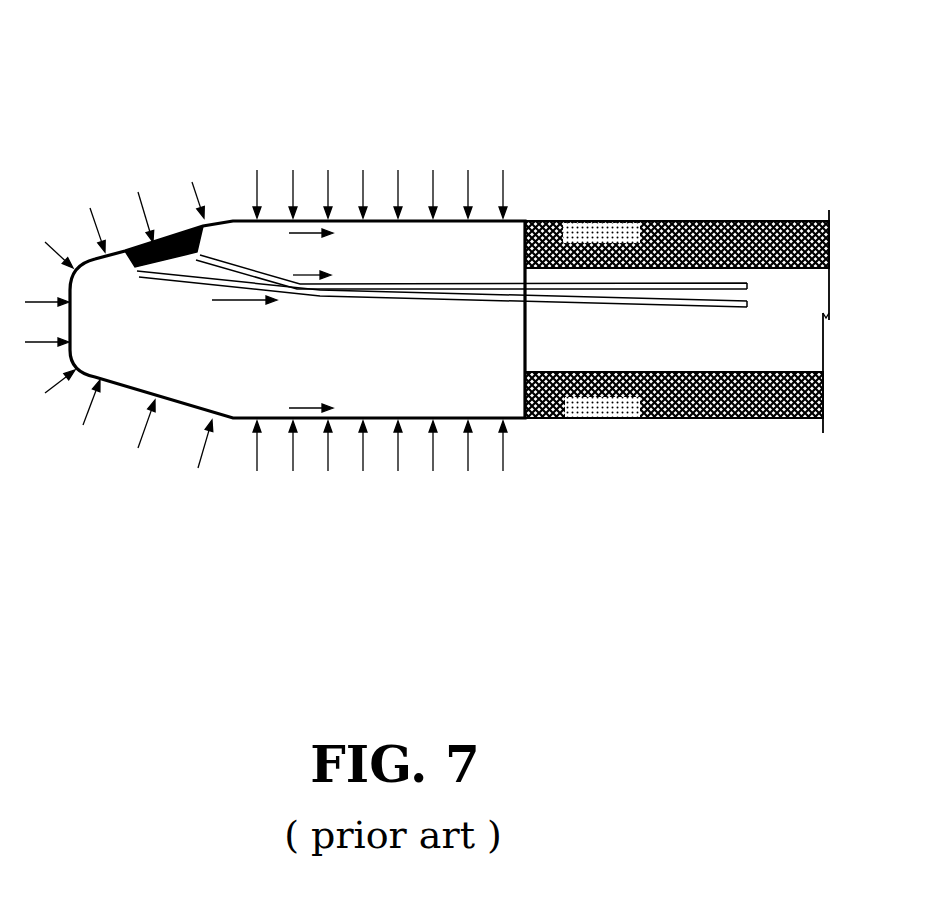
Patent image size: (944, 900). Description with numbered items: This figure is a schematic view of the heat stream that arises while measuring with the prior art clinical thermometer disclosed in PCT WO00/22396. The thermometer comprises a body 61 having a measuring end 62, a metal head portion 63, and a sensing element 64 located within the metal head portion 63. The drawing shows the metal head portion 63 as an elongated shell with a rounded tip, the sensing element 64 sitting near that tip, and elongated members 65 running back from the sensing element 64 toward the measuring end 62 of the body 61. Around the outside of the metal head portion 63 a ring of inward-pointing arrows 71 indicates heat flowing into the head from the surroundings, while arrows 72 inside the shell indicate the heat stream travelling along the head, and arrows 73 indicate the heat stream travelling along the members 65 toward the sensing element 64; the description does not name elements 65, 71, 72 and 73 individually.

The body 61 is at (427, 300).
The measuring end 62 is at (692, 221).
The metal head portion 63 is at (235, 221).
The sensing element 64 is at (159, 240).
The tubes 65 is at (481, 300).
The external heat flux arrows 71 is at (192, 182).
The internal flow arrows 72 is at (305, 237).
The tube flow arrows 73 is at (283, 275).